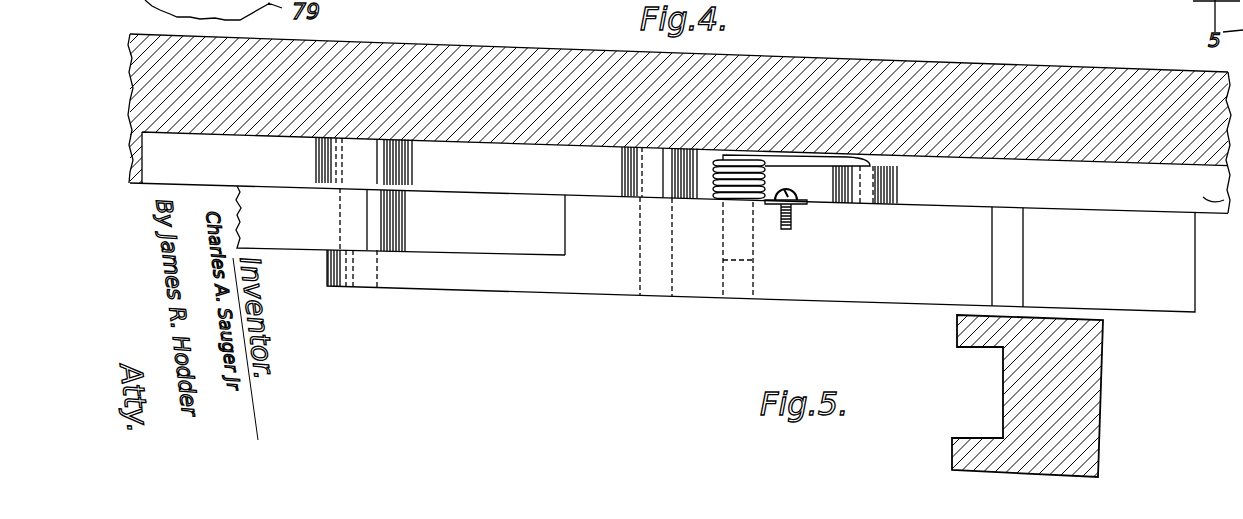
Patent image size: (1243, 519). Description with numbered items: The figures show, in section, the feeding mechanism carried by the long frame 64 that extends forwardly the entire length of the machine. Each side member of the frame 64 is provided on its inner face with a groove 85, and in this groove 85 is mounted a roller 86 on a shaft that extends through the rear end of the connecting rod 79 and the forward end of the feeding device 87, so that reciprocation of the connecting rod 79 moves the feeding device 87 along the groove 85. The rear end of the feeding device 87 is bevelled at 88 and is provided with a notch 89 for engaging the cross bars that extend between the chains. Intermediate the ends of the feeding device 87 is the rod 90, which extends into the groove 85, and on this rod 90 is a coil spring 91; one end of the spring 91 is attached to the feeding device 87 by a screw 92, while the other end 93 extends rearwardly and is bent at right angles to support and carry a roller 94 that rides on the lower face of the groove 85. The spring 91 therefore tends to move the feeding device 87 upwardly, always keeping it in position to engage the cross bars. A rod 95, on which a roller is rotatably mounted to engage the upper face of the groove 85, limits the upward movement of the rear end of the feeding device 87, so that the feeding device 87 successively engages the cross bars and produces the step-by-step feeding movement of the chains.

In FIG. 4, the frame 64 is at (382, 53).
In FIG. 5, the frame 64 is at (1082, 363).
In FIG. 4, the connecting rod 79 is at (268, 250).
In FIG. 4, the groove 85 is at (1205, 198).
In FIG. 5, the groove 85 is at (977, 423).
In FIG. 4, the roller 86 is at (332, 173).
In FIG. 4, the feeding device 87 is at (563, 278).
In FIG. 4, the bevelled rear end 88 is at (1160, 293).
In FIG. 4, the notch 89 is at (1003, 282).
In FIG. 4, the rod 90 is at (735, 247).
In FIG. 4, the coil spring 91 is at (718, 195).
In FIG. 4, the screw 92 is at (792, 192).
In FIG. 4, the spring end 93 is at (847, 163).
In FIG. 4, the roller 94 is at (897, 182).
In FIG. 4, the rod 95 is at (655, 283).